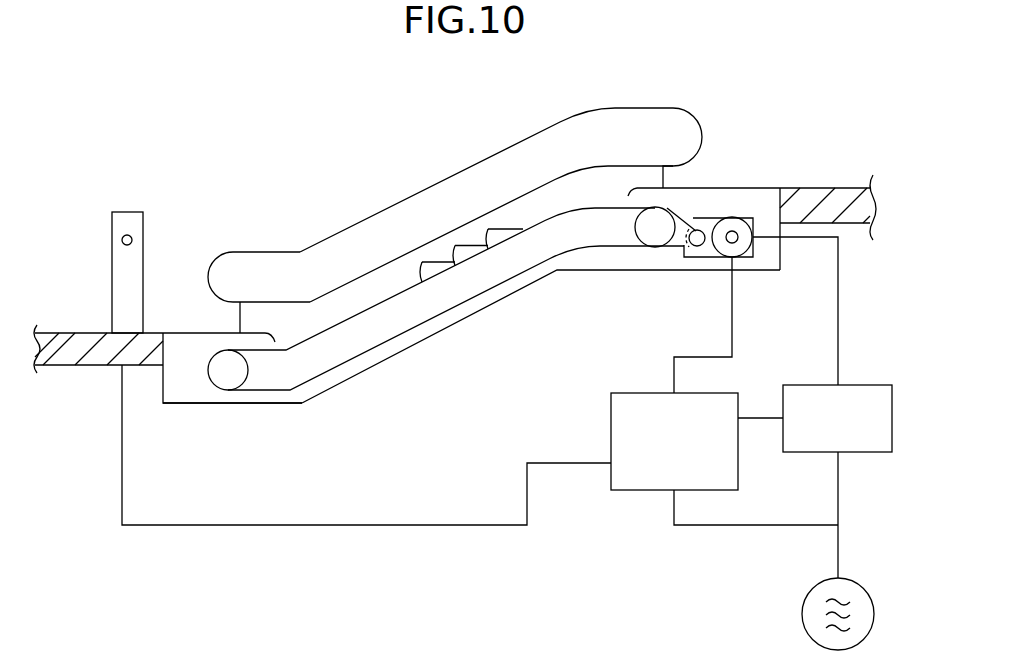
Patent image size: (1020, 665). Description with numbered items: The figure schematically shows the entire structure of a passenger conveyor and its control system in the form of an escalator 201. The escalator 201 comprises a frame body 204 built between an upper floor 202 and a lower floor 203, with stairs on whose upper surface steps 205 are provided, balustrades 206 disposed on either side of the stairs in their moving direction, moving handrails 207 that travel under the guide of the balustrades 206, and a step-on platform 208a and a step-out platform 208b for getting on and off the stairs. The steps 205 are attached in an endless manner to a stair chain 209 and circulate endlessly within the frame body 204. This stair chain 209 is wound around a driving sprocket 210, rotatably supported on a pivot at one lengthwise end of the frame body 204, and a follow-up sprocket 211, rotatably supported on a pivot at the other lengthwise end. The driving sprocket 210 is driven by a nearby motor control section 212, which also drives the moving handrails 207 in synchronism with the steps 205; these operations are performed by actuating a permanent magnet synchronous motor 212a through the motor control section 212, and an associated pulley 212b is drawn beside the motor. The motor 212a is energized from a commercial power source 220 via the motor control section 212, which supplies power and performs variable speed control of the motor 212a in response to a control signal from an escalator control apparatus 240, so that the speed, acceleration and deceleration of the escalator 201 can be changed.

The escalator 201 is at (385, 218).
The upper floor 202 is at (838, 188).
The lower floor 203 is at (80, 333).
The frame body 204 is at (283, 405).
The steps 205 is at (500, 228).
The balustrades 206 is at (547, 182).
The moving handrails 207 is at (625, 108).
The step-on platform 208a is at (193, 332).
The step-out platform 208b is at (680, 188).
The stair chain 209 is at (388, 337).
The driving sprocket 210 is at (653, 235).
The follow-up sprocket 211 is at (227, 382).
The motor control section 212 is at (810, 384).
The permanent magnet synchronous motor 212a is at (733, 218).
The large pulley 212b is at (744, 221).
The commercial power source 220 is at (802, 612).
The escalator control apparatus 240 is at (611, 418).